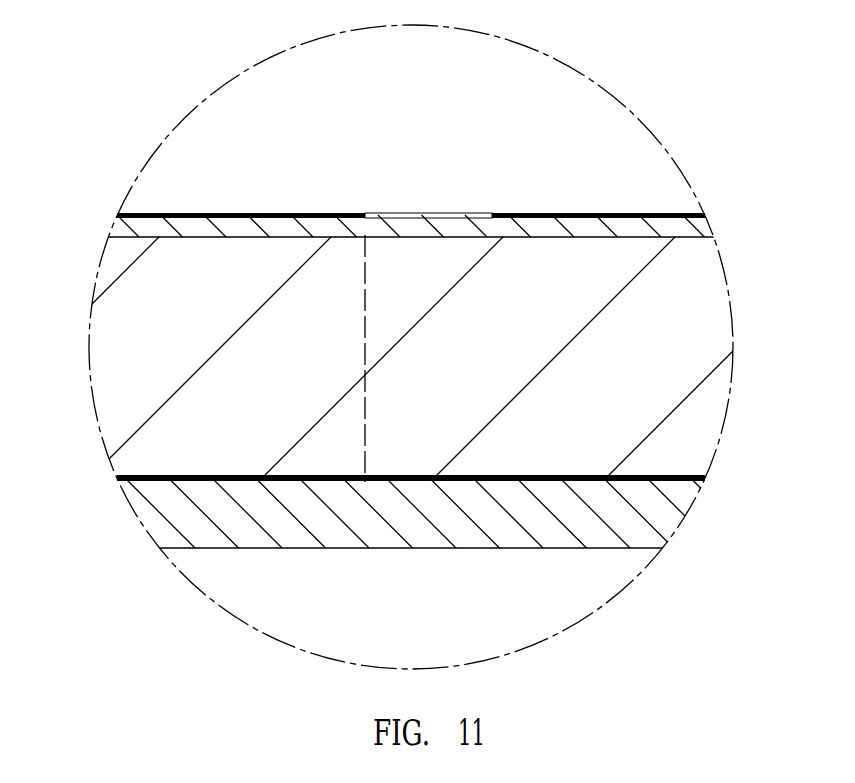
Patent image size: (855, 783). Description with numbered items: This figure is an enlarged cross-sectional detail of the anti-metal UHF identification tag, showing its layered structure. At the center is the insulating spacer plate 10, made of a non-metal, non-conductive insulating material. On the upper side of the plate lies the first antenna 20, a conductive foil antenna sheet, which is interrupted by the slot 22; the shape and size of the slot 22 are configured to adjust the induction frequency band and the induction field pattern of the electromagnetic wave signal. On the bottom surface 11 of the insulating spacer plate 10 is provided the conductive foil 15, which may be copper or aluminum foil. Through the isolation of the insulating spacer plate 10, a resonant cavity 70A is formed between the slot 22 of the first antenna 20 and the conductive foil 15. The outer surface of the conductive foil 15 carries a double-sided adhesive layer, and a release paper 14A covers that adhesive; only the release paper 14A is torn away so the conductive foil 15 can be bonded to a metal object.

The insulating spacer plate 10 is at (130, 302).
The bottom surface 11 is at (213, 477).
The release paper 14A is at (160, 517).
The conductive foil 15 is at (117, 478).
The first antenna 20 is at (237, 213).
The slot 22 is at (428, 213).
The resonant cavity 70A is at (512, 343).